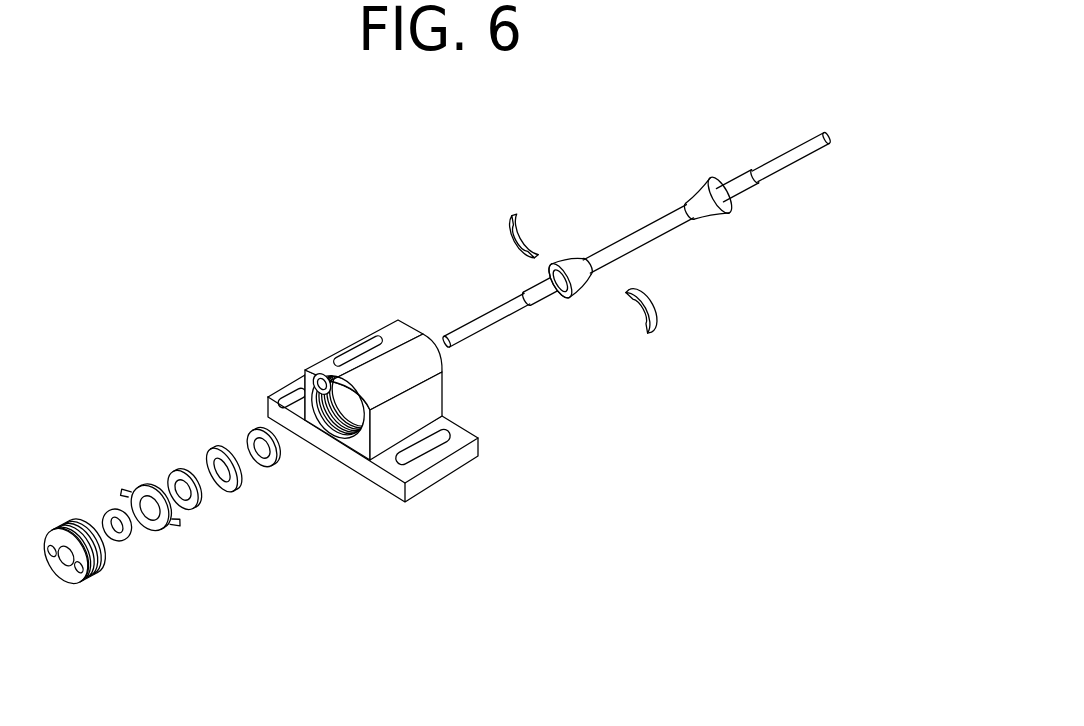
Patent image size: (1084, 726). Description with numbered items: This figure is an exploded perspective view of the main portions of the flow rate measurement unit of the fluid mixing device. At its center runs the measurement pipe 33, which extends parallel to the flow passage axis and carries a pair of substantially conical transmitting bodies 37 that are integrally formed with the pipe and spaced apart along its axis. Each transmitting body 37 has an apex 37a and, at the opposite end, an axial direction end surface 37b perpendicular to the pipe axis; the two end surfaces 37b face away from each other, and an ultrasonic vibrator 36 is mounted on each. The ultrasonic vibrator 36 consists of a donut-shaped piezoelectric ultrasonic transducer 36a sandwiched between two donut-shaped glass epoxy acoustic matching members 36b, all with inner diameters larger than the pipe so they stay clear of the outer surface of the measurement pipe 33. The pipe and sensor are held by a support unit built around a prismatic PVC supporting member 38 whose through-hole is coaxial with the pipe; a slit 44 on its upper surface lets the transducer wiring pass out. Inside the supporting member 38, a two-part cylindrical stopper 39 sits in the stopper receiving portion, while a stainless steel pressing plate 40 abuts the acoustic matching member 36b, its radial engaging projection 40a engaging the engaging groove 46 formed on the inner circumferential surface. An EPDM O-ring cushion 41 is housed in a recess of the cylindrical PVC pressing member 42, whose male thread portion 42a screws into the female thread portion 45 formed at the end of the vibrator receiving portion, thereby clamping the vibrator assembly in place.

The measurement pipe 33 is at (637, 238).
The ultrasonic vibrator 36 is at (243, 544).
The ultrasonic transducer 36a is at (226, 494).
The acoustic matching member 36b is at (193, 510).
The transmitting body 37 is at (712, 220).
The apex 37a is at (587, 273).
The axial direction end surface 37b is at (570, 304).
The supporting member 38 is at (373, 397).
The stopper 39 is at (502, 220).
The pressing plate 40 is at (135, 531).
The engaging projection 40a is at (128, 492).
The cushion 41 is at (123, 543).
The pressing member 42 is at (70, 574).
The male thread portion 42a is at (72, 517).
The slit 44 is at (358, 357).
The female thread portion 45 is at (340, 452).
The engaging groove 46 is at (315, 373).